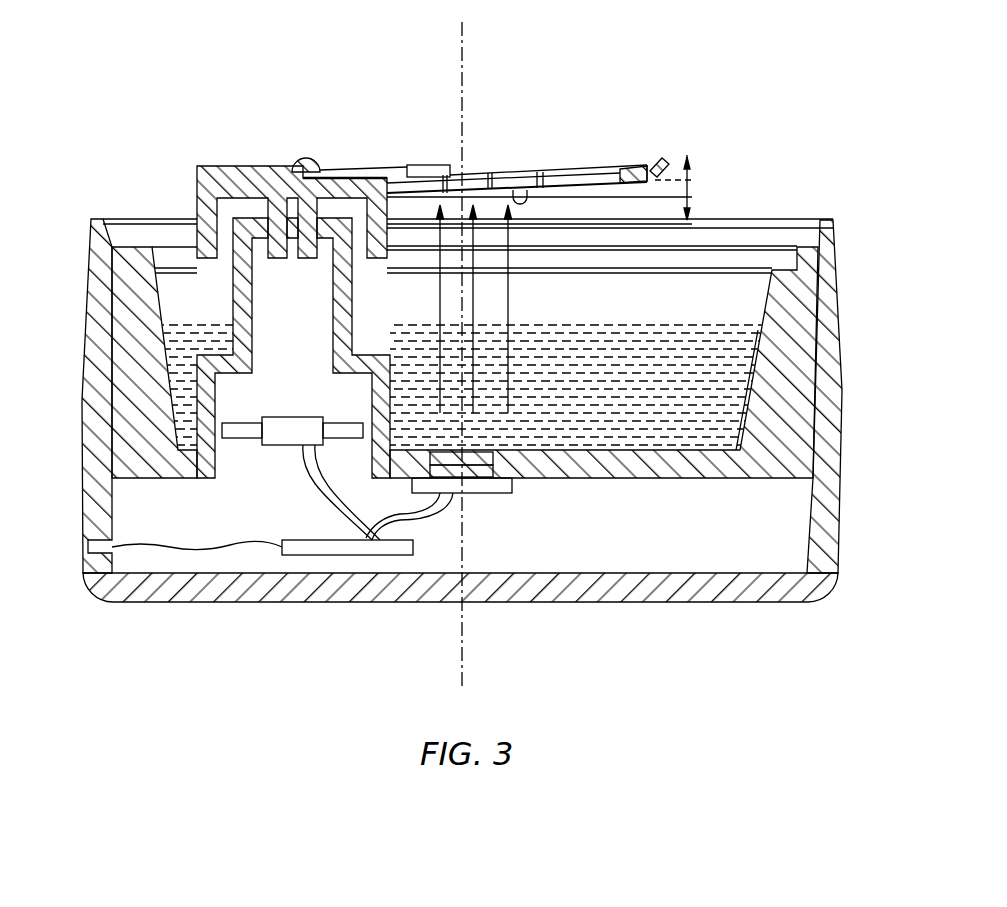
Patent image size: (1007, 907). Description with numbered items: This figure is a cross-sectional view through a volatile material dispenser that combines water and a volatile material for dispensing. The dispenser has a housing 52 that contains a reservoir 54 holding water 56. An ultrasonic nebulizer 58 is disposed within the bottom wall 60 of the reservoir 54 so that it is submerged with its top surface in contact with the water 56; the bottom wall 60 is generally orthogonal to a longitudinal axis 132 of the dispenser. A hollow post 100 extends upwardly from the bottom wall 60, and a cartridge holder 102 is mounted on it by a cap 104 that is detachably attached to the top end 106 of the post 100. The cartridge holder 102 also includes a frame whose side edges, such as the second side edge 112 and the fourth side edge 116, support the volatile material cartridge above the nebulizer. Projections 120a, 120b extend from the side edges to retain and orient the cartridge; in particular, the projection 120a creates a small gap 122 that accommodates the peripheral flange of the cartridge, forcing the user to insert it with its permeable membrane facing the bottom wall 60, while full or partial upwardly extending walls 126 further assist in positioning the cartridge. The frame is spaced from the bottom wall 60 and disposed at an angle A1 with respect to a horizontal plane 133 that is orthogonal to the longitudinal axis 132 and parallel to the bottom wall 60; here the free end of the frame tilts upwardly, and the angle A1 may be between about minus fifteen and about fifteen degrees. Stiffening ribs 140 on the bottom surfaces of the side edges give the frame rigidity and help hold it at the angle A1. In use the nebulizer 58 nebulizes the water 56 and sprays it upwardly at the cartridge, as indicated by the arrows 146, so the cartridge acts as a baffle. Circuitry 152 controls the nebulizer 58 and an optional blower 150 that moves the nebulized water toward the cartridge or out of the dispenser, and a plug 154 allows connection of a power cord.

The housing 52 is at (842, 512).
The reservoir 54 is at (748, 437).
The water 56 is at (197, 333).
The ultrasonic nebulizer 58 is at (478, 494).
The bottom wall 60 is at (676, 450).
The hollow post 100 is at (432, 250).
The cartridge holder 102 is at (495, 113).
The cap 104 is at (250, 166).
The top end 106 is at (233, 317).
The second side edge 112 is at (650, 157).
The fourth side edge 116 is at (577, 167).
The projection 120a is at (313, 157).
The projection 120b is at (668, 160).
The gap 122 is at (327, 177).
The upwardly extending wall 126 is at (402, 168).
The longitudinal axis 132 is at (465, 32).
The horizontal plane 133 is at (647, 198).
The stiffening rib 140 is at (531, 170).
The arrows 146 is at (475, 294).
The blower 150 is at (272, 446).
The circuitry 152 is at (325, 562).
The plug 154 is at (87, 556).
The angle A1 is at (694, 182).